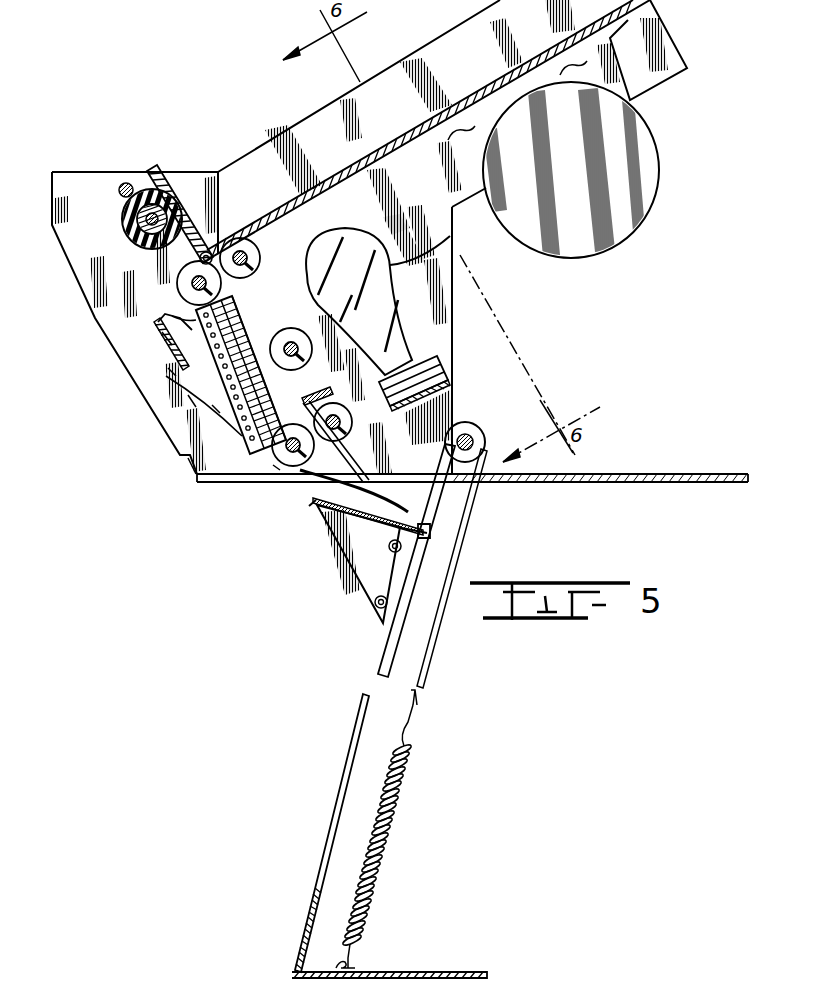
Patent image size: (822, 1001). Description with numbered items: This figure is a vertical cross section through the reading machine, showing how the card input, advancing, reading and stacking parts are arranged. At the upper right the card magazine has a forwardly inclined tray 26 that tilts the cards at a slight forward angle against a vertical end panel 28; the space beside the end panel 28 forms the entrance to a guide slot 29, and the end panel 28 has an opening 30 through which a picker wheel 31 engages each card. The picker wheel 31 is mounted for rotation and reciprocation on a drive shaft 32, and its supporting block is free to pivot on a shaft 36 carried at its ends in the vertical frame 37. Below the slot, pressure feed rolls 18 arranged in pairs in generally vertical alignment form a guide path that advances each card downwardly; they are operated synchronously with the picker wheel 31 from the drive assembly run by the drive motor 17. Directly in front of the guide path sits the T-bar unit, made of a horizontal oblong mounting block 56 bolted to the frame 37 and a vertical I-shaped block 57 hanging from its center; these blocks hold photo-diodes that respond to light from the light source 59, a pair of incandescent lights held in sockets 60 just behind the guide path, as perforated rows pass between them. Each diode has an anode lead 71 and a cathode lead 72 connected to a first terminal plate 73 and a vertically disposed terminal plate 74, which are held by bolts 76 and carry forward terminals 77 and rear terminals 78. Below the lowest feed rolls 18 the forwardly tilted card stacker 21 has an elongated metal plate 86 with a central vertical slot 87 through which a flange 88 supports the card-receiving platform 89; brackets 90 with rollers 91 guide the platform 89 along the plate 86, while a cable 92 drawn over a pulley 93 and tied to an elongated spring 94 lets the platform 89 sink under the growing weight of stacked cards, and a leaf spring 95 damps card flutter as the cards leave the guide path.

The drive motor 17 is at (645, 222).
The pressure feed rolls 18 is at (259, 258).
The card stacker 21 is at (326, 679).
The tray 26 is at (637, 17).
The vertical end panel 28 is at (152, 170).
The guide slot 29 is at (205, 250).
The opening 30 is at (147, 192).
The picker wheel 31 is at (122, 228).
The drive shaft 32 is at (138, 226).
The shaft 36 is at (121, 186).
The vertical frame 37 is at (687, 70).
The horizontal mounting block 56 is at (232, 300).
The vertical I-shaped block 57 is at (248, 334).
The light source 59 is at (450, 236).
The sockets 60 is at (428, 366).
The anode lead 71 is at (172, 316).
The cathode lead 72 is at (158, 320).
The first terminal plate 73 is at (160, 346).
The vertically disposed terminal plate 74 is at (238, 428).
The bolts 76 is at (168, 368).
The forward terminals 77 is at (162, 332).
The rear terminals 78 is at (188, 395).
The elongated metal plate 86 is at (300, 930).
The vertical slot 87 is at (322, 851).
The flange 88 is at (425, 534).
The platform 89 is at (314, 502).
The brackets 90 is at (346, 571).
The rollers 91 is at (389, 546).
The cable 92 is at (424, 685).
The pulley 93 is at (481, 436).
The elongated spring 94 is at (392, 832).
The leaf spring 95 is at (318, 478).